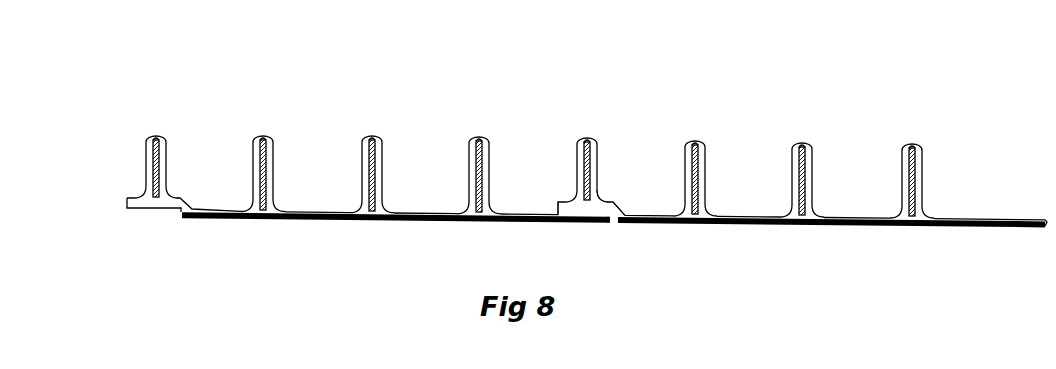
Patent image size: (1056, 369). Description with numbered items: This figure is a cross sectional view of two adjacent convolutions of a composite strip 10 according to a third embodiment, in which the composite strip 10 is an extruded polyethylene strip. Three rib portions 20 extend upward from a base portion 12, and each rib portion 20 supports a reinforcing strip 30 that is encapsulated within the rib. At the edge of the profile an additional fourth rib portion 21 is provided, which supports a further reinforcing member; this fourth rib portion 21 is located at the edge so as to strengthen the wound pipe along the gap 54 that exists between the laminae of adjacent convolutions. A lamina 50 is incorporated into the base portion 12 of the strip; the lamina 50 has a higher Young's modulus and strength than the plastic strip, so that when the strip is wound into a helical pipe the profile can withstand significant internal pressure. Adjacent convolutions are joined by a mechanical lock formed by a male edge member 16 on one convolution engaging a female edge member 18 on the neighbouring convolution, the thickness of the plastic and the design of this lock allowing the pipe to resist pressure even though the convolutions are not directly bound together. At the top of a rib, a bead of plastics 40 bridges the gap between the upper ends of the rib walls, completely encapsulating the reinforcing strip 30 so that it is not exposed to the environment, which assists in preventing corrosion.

The composite strip 10 is at (587, 182).
The base portion 12 is at (855, 216).
The male edge member 16 is at (613, 232).
The female edge member 18 is at (623, 148).
The rib portion 20 is at (705, 163).
The fourth rib portion 21 is at (599, 183).
The reinforcing strip 30 is at (597, 162).
The bead of plastics 40 is at (913, 141).
The lamina 50 is at (818, 228).
The gap 54 is at (612, 236).